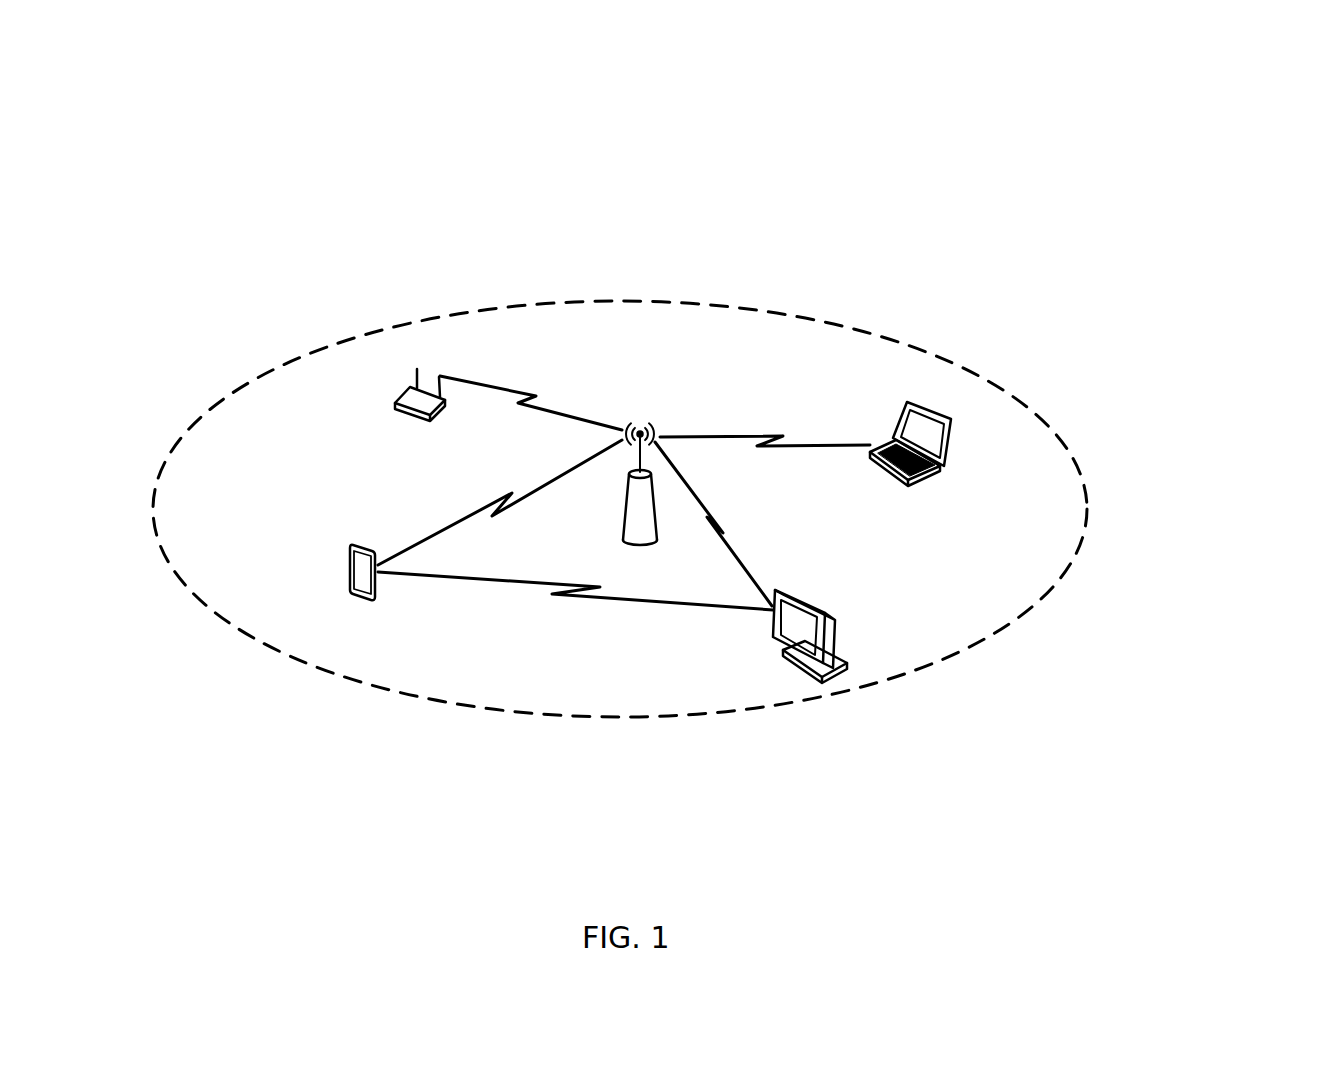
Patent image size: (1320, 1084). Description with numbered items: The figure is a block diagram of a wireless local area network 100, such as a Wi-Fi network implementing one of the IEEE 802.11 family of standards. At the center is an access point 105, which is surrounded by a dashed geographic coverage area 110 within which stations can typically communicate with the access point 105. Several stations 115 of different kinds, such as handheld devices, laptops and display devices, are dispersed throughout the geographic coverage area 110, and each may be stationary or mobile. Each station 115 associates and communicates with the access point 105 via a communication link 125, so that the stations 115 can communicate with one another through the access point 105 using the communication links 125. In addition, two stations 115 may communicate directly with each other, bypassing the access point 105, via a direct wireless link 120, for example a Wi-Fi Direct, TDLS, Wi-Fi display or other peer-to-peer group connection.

The wireless local area network 100 is at (1197, 97).
The access point 105 is at (640, 546).
The geographic coverage area 110 is at (352, 681).
The station 115 is at (394, 401).
The direct wireless link 120 is at (480, 578).
The communication link 125 is at (578, 413).